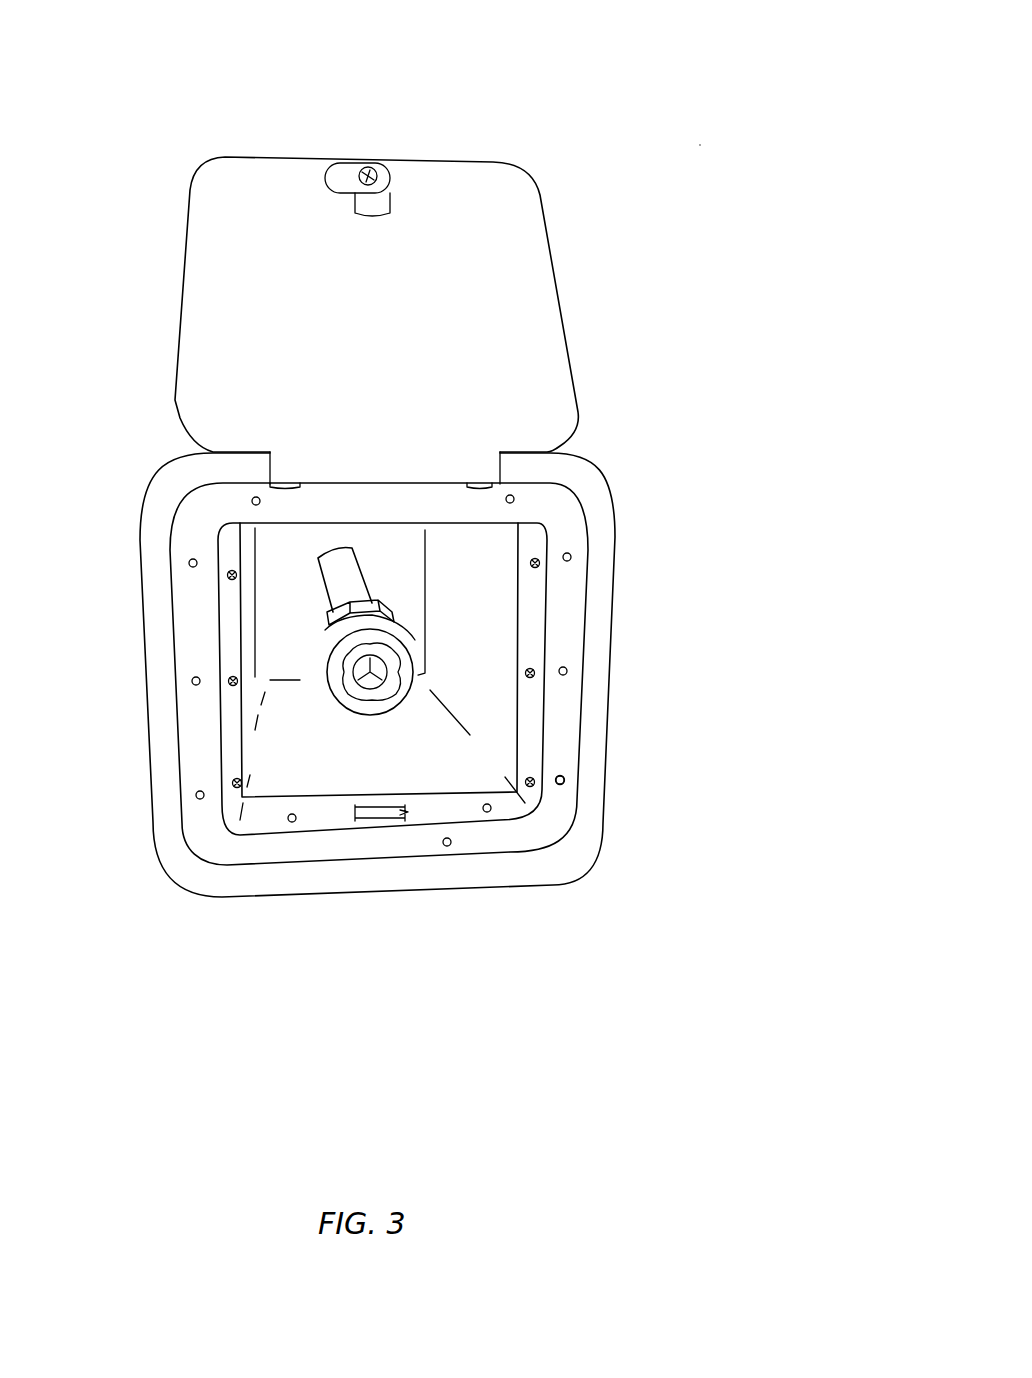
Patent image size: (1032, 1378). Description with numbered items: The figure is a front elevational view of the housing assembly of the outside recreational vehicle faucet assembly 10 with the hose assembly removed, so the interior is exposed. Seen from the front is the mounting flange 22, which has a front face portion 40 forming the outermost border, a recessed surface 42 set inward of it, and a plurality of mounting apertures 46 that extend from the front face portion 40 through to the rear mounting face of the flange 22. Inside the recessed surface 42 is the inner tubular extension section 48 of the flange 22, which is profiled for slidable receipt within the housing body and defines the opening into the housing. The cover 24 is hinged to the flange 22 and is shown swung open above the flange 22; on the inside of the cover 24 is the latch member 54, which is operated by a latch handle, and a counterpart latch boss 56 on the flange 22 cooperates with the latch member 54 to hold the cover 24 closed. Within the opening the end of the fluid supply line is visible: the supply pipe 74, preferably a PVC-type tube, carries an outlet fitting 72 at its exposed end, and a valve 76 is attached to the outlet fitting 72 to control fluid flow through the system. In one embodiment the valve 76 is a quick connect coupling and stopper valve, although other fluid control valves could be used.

The outside recreational vehicle faucet assembly 10 is at (623, 212).
The mounting flange 22 is at (618, 530).
The cover 24 is at (228, 304).
The front face portion 40 is at (600, 647).
The recessed surface 42 is at (567, 605).
The mounting apertures 46 is at (557, 780).
The inner tubular extension section 48 is at (530, 708).
The latch member 54 is at (353, 163).
The latch boss 56 is at (377, 810).
The outlet fitting 72 is at (323, 643).
The supply pipe 74 is at (323, 585).
The valve 76 is at (405, 708).